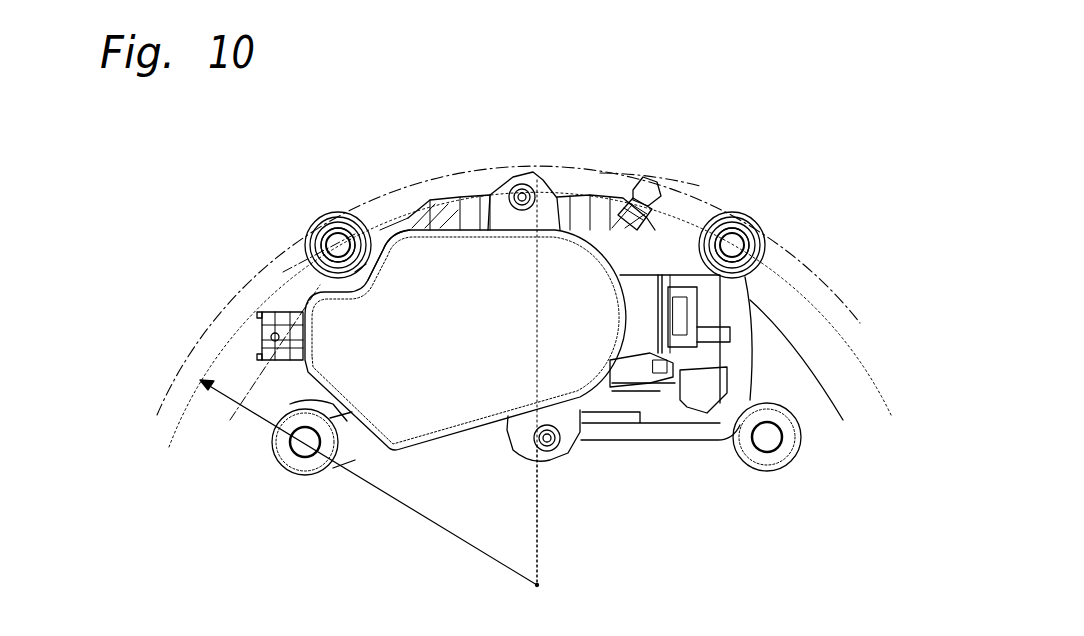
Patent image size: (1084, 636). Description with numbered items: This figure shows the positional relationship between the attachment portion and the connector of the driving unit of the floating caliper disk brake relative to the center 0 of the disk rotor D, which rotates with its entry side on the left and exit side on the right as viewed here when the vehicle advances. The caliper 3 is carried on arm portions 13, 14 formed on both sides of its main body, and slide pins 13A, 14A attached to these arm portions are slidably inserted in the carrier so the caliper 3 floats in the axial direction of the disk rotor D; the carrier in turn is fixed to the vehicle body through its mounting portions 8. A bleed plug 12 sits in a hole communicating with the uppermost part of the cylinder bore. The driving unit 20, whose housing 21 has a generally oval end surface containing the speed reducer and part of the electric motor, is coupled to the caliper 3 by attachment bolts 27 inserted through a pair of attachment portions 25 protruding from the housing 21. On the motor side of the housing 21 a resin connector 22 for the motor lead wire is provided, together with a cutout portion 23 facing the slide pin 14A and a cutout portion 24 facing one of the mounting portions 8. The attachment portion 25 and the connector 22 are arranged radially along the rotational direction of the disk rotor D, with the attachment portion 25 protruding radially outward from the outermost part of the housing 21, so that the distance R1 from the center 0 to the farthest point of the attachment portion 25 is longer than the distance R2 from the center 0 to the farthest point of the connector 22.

The caliper 3 is at (470, 190).
The mounting portion 8 is at (271, 447).
The bleed plug 12 is at (647, 178).
The arm portion 13 is at (732, 210).
The slide pin 13A is at (760, 220).
The arm portion 14 is at (338, 212).
The slide pin 14A is at (306, 243).
The driving unit 20 is at (560, 343).
The housing 21 is at (457, 267).
The connector 22 is at (258, 330).
The cutout portion 23 is at (376, 248).
The cutout portion 24 is at (293, 407).
The attachment portion 25 is at (555, 192).
The attachment bolt 27 is at (525, 177).
The disk rotor D is at (778, 373).
The distance R1 is at (551, 515).
The distance R2 is at (368, 482).
The center 0 is at (541, 600).